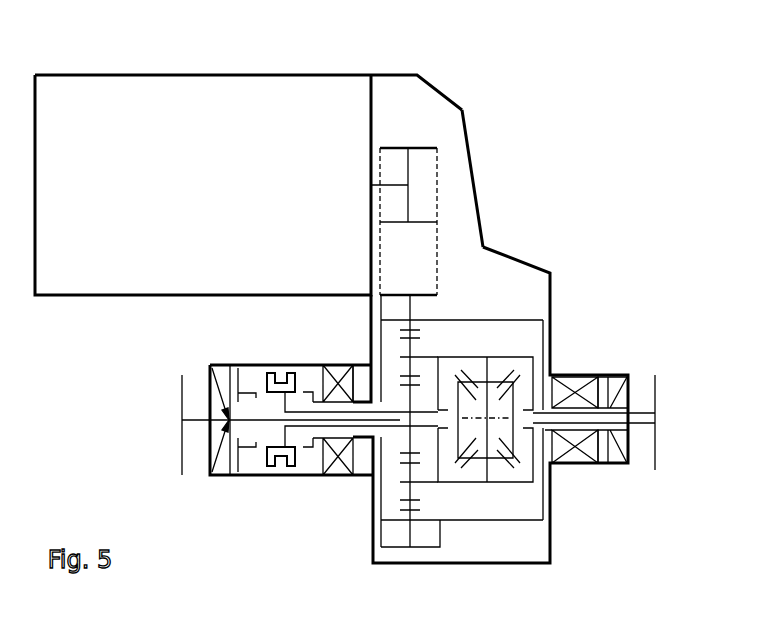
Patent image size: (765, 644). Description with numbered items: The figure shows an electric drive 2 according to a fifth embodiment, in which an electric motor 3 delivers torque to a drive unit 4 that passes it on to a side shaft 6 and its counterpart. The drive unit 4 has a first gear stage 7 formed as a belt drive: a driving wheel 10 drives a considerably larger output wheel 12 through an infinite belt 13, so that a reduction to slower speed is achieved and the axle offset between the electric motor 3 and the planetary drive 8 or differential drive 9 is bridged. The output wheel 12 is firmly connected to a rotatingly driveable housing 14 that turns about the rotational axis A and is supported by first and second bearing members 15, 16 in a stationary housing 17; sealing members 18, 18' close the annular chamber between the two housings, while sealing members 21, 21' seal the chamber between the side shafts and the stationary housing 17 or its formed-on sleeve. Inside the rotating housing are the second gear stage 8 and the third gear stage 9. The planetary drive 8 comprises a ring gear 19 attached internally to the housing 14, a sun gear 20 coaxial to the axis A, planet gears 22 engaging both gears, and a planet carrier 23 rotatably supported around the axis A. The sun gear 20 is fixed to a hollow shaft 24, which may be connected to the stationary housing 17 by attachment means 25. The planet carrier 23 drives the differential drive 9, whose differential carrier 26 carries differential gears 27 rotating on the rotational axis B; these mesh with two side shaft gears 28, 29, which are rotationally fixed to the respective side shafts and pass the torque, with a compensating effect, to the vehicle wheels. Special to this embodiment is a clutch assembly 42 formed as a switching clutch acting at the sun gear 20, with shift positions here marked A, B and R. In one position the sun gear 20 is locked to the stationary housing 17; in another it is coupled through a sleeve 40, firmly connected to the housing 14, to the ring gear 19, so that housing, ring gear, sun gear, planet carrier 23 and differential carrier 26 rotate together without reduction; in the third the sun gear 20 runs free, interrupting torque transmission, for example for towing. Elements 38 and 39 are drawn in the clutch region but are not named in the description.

The electric drive 2 is at (583, 117).
The electric motor 3 is at (203, 185).
The drive unit 4 is at (455, 93).
The side shaft 6 is at (195, 423).
The first gear stage 7 is at (400, 128).
The second gear stage 8 is at (423, 538).
The third gear stage 9 is at (547, 485).
The driving wheel 10 is at (427, 142).
The output wheel 12 is at (427, 290).
The infinite belt 13 is at (425, 247).
The rotatingly driveable housing 14 is at (528, 313).
The first bearing member 15 is at (590, 380).
The second bearing member 16 is at (337, 478).
The stationary housing 17 is at (477, 184).
The sealing member 18 is at (575, 400).
The sealing member 18' is at (354, 362).
The ring gear 19 is at (423, 337).
The sun gear 20 is at (403, 463).
The sealing member 21 is at (601, 395).
The sealing member 21' is at (210, 506).
The planet gears 22 is at (410, 347).
The planet carrier 23 is at (427, 485).
The hollow shaft 24 is at (359, 474).
The attachment means 25 is at (237, 372).
The differential carrier 26 is at (512, 470).
The differential gears 27 is at (500, 486).
The side shaft gear 28 is at (527, 440).
The side shaft gear 29 is at (448, 375).
The synchronizer 38 is at (272, 372).
The synchronizer 39 is at (253, 470).
The sleeve 40 is at (321, 367).
The clutch assembly 42 is at (272, 488).
The rotational axis A is at (477, 438).
The rotational axis B is at (500, 453).
The reverse position R is at (477, 520).